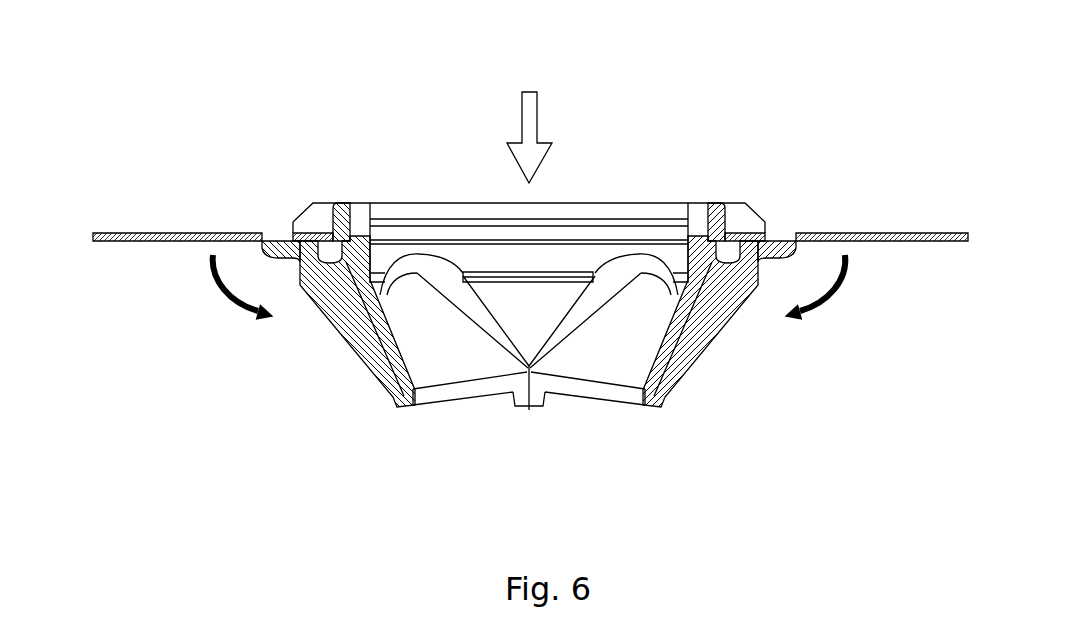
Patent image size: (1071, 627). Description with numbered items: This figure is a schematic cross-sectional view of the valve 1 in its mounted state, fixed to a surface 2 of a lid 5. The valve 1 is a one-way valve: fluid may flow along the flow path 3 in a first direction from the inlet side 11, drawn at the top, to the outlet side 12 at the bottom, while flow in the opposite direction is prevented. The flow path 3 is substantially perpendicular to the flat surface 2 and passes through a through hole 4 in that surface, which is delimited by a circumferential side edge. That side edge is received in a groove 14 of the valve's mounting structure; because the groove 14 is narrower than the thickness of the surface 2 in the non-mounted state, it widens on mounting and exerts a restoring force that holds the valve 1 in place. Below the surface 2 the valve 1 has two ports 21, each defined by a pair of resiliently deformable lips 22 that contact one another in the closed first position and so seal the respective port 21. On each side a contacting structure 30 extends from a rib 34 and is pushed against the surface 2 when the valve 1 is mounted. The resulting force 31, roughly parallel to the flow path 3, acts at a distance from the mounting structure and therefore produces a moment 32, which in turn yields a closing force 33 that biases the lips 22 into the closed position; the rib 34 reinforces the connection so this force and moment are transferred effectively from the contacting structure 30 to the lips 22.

The valve 1 is at (349, 92).
The surface 2 is at (165, 243).
The flow path 3 is at (530, 123).
The through hole 4 is at (529, 198).
The groove 14 is at (368, 205).
The lid 5 is at (530, 207).
The inlet side 11 is at (572, 112).
The outlet side 12 is at (551, 479).
The port 21 is at (570, 358).
The lip 22 is at (458, 392).
The contacting structure 30 is at (262, 238).
The force 31 is at (273, 206).
The moment 32 is at (227, 287).
The closing force 33 is at (360, 390).
The rib 34 is at (340, 322).